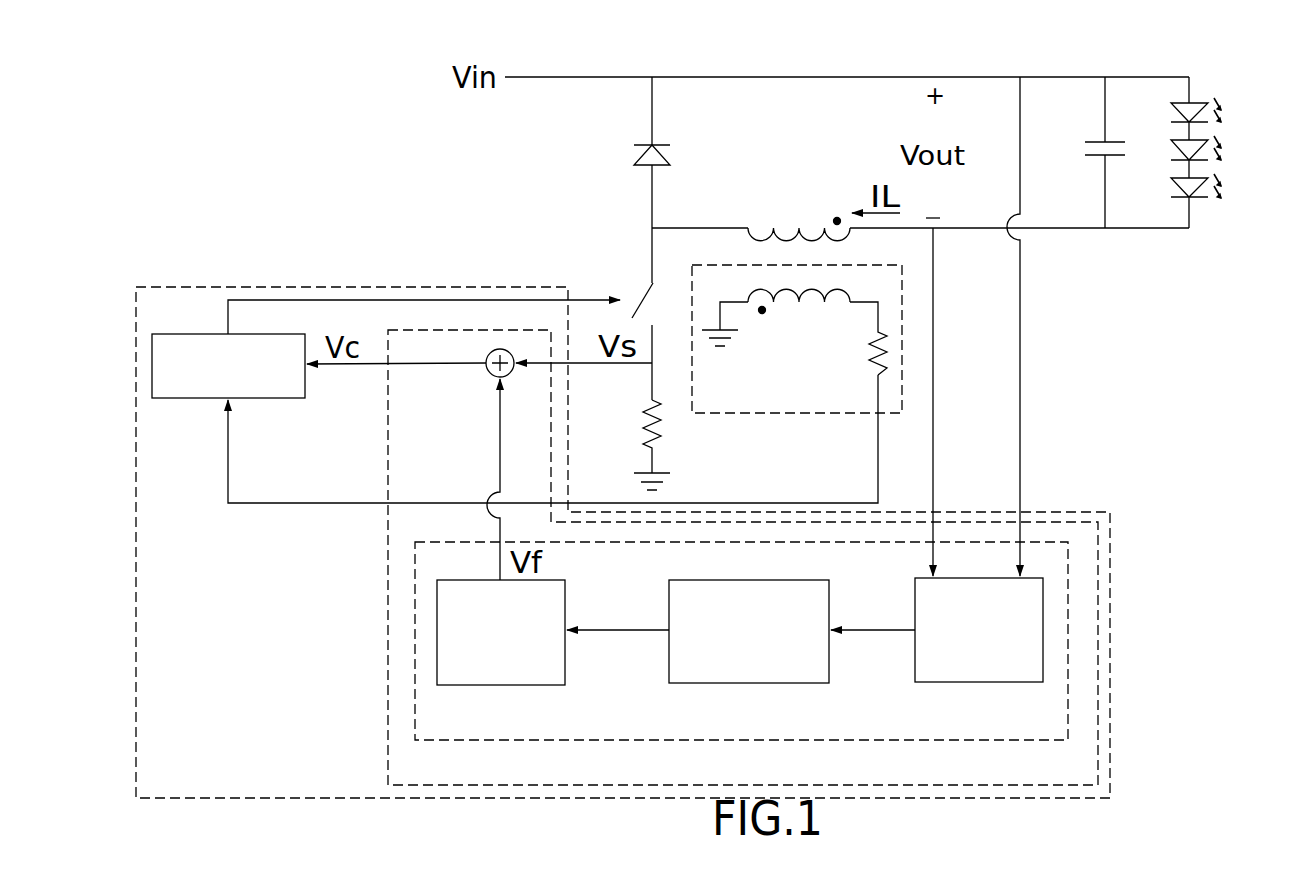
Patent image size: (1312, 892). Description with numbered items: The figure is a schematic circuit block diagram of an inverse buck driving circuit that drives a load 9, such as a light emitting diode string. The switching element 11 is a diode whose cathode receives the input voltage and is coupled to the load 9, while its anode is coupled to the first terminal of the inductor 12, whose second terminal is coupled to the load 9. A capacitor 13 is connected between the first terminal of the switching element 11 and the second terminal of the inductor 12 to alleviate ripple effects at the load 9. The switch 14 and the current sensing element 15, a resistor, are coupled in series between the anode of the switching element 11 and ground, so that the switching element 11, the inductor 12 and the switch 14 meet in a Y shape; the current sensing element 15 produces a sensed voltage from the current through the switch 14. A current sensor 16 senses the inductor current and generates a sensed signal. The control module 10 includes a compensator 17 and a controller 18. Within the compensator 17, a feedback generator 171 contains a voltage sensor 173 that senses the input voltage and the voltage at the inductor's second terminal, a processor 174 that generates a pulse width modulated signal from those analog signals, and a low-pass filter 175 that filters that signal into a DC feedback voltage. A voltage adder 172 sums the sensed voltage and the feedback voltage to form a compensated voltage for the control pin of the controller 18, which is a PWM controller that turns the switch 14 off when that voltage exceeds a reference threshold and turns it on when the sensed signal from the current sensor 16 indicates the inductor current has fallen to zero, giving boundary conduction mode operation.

The load 9 is at (1202, 95).
The control module 10 is at (1112, 762).
The switching element 11 is at (636, 158).
The inductor 12 is at (800, 226).
The capacitor 13 is at (1094, 143).
The switch 14 is at (643, 298).
The current sensing element 15 is at (644, 411).
The current sensor 16 is at (786, 414).
The compensator 17 is at (1100, 565).
The controller 18 is at (192, 334).
The feedback generator 171 is at (1070, 600).
The voltage adder 172 is at (489, 378).
The voltage sensor 173 is at (1045, 648).
The processor 174 is at (798, 580).
The low-pass filter 175 is at (437, 645).